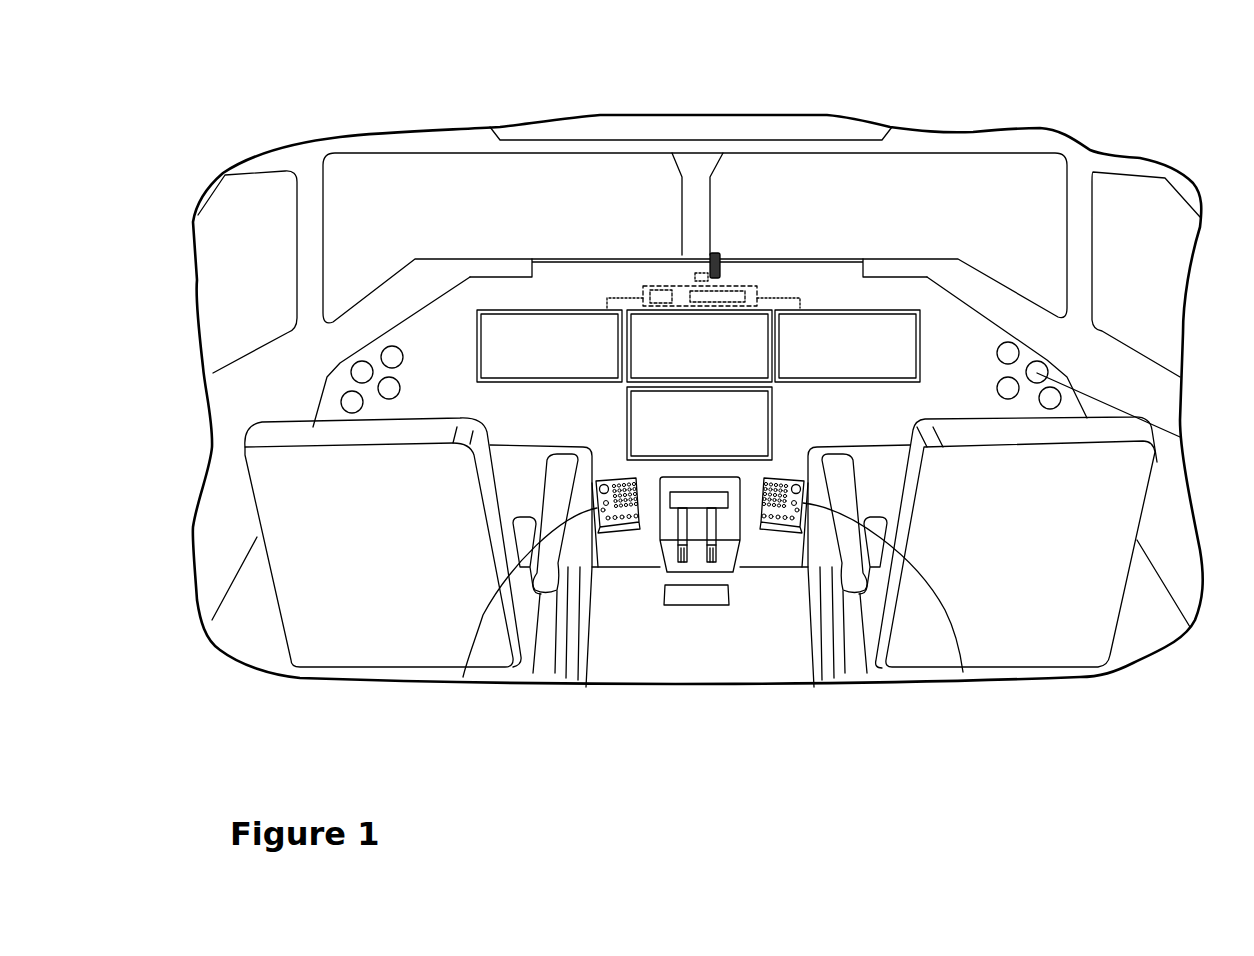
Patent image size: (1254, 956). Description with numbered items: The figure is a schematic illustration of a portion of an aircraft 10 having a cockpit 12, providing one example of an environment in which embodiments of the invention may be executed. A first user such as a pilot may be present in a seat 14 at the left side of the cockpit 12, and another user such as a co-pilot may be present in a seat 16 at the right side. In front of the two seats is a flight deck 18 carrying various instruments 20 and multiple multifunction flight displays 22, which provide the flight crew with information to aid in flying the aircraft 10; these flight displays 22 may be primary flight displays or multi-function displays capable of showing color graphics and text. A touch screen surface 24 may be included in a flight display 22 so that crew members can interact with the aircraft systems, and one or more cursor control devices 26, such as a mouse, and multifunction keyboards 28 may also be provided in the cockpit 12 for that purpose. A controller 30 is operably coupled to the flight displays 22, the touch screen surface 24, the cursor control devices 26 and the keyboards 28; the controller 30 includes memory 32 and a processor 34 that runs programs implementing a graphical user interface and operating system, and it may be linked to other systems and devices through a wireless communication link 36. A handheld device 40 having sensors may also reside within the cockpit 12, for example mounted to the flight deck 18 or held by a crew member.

The aircraft 10 is at (313, 81).
The cockpit 12 is at (437, 135).
The seat 14 is at (333, 633).
The seat 16 is at (1047, 623).
The flight deck 18 is at (353, 351).
The instruments 20 is at (342, 402).
The multifunction flight displays 22 is at (592, 306).
The touch screen surface 24 is at (557, 330).
The cursor control device 26 is at (600, 487).
The multifunction keyboard 28 is at (630, 535).
The controller 30 is at (743, 305).
The memory 32 is at (657, 287).
The processor 34 is at (730, 287).
The wireless communication link 36 is at (682, 306).
The handheld device 40 is at (711, 256).